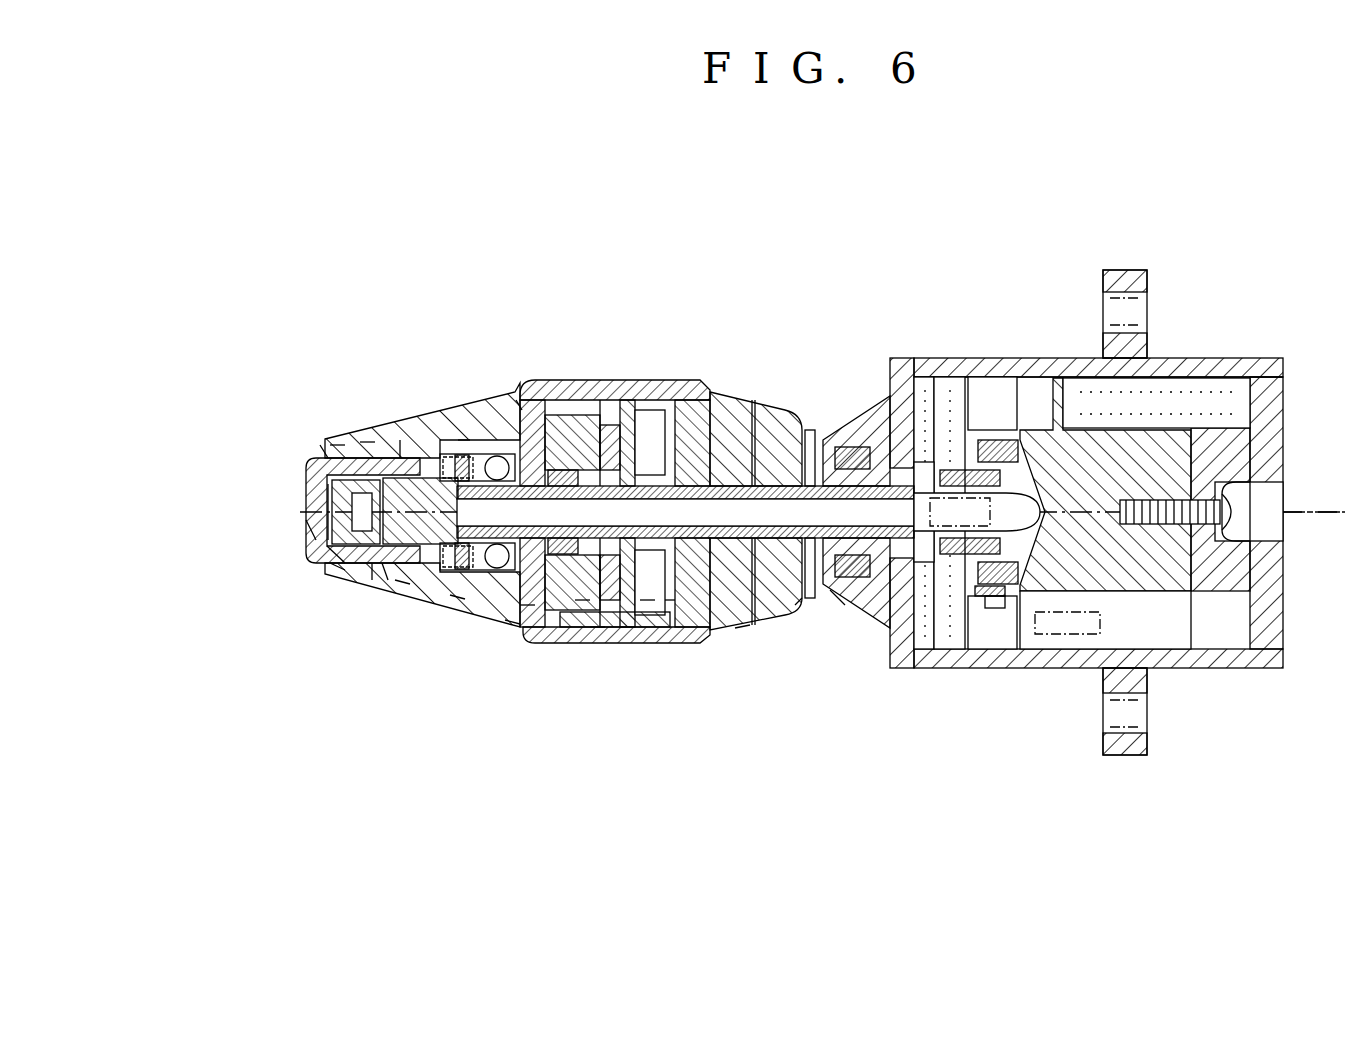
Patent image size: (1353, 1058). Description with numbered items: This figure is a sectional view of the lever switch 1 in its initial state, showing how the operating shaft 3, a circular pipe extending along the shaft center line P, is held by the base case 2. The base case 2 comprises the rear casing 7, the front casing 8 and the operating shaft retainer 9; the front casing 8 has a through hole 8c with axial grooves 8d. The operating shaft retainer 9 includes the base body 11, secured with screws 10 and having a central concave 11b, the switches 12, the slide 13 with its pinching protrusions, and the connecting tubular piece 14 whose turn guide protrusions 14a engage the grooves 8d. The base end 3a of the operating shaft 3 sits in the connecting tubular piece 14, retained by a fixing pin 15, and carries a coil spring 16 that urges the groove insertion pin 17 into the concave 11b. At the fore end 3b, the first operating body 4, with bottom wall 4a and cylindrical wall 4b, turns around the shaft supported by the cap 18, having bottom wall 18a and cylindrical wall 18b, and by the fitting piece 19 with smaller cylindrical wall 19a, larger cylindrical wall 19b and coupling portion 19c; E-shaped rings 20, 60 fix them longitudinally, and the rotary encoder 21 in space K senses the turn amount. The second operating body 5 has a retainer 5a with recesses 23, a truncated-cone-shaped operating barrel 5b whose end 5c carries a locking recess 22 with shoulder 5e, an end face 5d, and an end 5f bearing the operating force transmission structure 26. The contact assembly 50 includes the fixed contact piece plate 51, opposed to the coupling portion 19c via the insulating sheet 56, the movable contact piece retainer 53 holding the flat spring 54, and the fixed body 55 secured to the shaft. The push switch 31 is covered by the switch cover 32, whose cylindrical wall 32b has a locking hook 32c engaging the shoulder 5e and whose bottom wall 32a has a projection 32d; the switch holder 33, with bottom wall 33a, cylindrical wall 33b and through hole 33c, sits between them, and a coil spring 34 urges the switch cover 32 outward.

The lever switch 1 is at (835, 232).
The base case 2 is at (988, 256).
The operating shaft 3 is at (782, 484).
The base end 3a is at (960, 468).
The fore end 3b is at (461, 438).
The first operating body 4 is at (627, 378).
The bottom wall 4a is at (760, 425).
The cylindrical wall 4b is at (666, 383).
The second operating body 5 is at (424, 422).
The retainer 5a is at (456, 605).
The truncated-cone-shaped operating barrel 5b is at (400, 592).
The end 5c is at (356, 545).
The end face 5d is at (332, 448).
The shoulder 5e is at (366, 444).
The end 5f is at (512, 630).
The rear casing 7 is at (1211, 354).
The front casing 8 is at (1026, 355).
The through hole 8c is at (925, 460).
The grooves 8d is at (866, 446).
The operating shaft retainer 9 is at (1159, 402).
The screws 10 is at (1248, 500).
The base body 11 is at (1175, 600).
The concave 11b is at (1048, 400).
The switch 12 is at (1038, 642).
The slide 13 is at (995, 438).
The connecting tubular piece 14 is at (850, 430).
The turn guide protrusions 14a is at (840, 607).
The fixing pin 15 is at (925, 650).
The coil spring 16 is at (946, 650).
The groove insertion pin 17 is at (1000, 640).
The cap 18 is at (779, 630).
The bottom wall 18a is at (805, 600).
The cylindrical wall 18b is at (742, 630).
The fitting piece 19 is at (628, 642).
The smaller diameter cylindrical wall 19a is at (672, 632).
The larger diameter cylindrical wall 19b is at (578, 630).
The coupling portion 19c is at (650, 642).
The E-shaped ring 20 is at (809, 430).
The rotary encoder 21 is at (650, 400).
The locking recess 22 is at (455, 458).
The recesses 23 is at (490, 452).
The operating force transmission structure 26 is at (520, 405).
The push switch 31 is at (395, 546).
The switch cover 32 is at (303, 468).
The bottom wall 32a is at (318, 542).
The cylindrical wall 32b is at (372, 582).
The locking hook 32c is at (400, 440).
The projection 32d is at (332, 566).
The switch holder 33 is at (342, 478).
The bottom wall 33a is at (335, 578).
The cylindrical wall 33b is at (384, 584).
The through hole 33c is at (326, 492).
The coil spring 34 is at (320, 450).
The contact assembly 50 is at (212, 896).
The fixed contact piece plate 51 is at (570, 398).
The movable contact piece retainer 53 is at (556, 412).
The flat spring 54 is at (562, 418).
The fixed body 55 is at (526, 615).
The insulating sheet 56 is at (597, 642).
The E-shaped ring 60 is at (592, 378).
The space K is at (601, 398).
The shaft center line P is at (1290, 514).